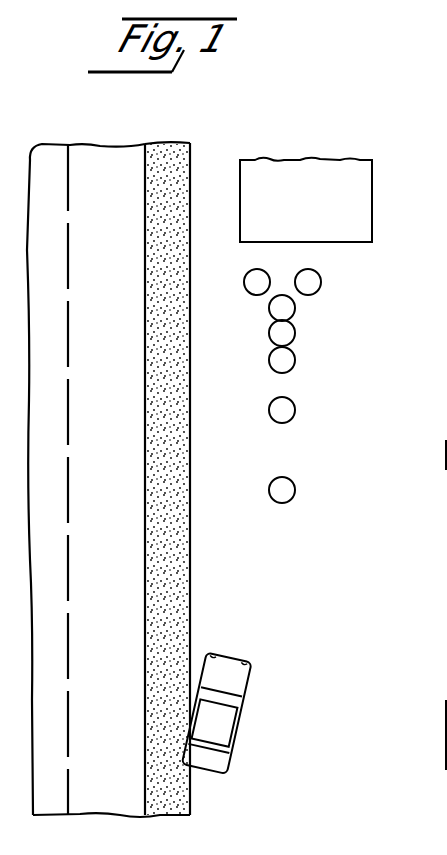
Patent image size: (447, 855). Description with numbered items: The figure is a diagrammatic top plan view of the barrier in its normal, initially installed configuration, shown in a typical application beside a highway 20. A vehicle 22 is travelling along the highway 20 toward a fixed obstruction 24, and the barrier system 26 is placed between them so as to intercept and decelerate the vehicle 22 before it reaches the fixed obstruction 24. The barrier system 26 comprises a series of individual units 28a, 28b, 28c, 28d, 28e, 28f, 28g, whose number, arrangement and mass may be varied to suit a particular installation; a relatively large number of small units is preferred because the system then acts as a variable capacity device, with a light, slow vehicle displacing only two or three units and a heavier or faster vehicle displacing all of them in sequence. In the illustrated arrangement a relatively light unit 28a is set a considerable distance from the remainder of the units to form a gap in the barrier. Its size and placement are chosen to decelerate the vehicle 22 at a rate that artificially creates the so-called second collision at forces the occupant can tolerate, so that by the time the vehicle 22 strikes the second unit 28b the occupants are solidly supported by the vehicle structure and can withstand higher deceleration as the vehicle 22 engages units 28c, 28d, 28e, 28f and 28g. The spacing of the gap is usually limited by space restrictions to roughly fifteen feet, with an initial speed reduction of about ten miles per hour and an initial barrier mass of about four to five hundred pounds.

The highway 20 is at (123, 476).
The vehicle 22 is at (243, 675).
The fixed obstruction 24 is at (373, 201).
The barrier system 26 is at (258, 394).
The individual unit 28a is at (294, 490).
The individual unit 28b is at (294, 410).
The individual unit 28c is at (294, 361).
The individual unit 28d is at (294, 332).
The individual unit 28e is at (294, 306).
The individual unit 28f is at (252, 289).
The individual unit 28g is at (320, 282).